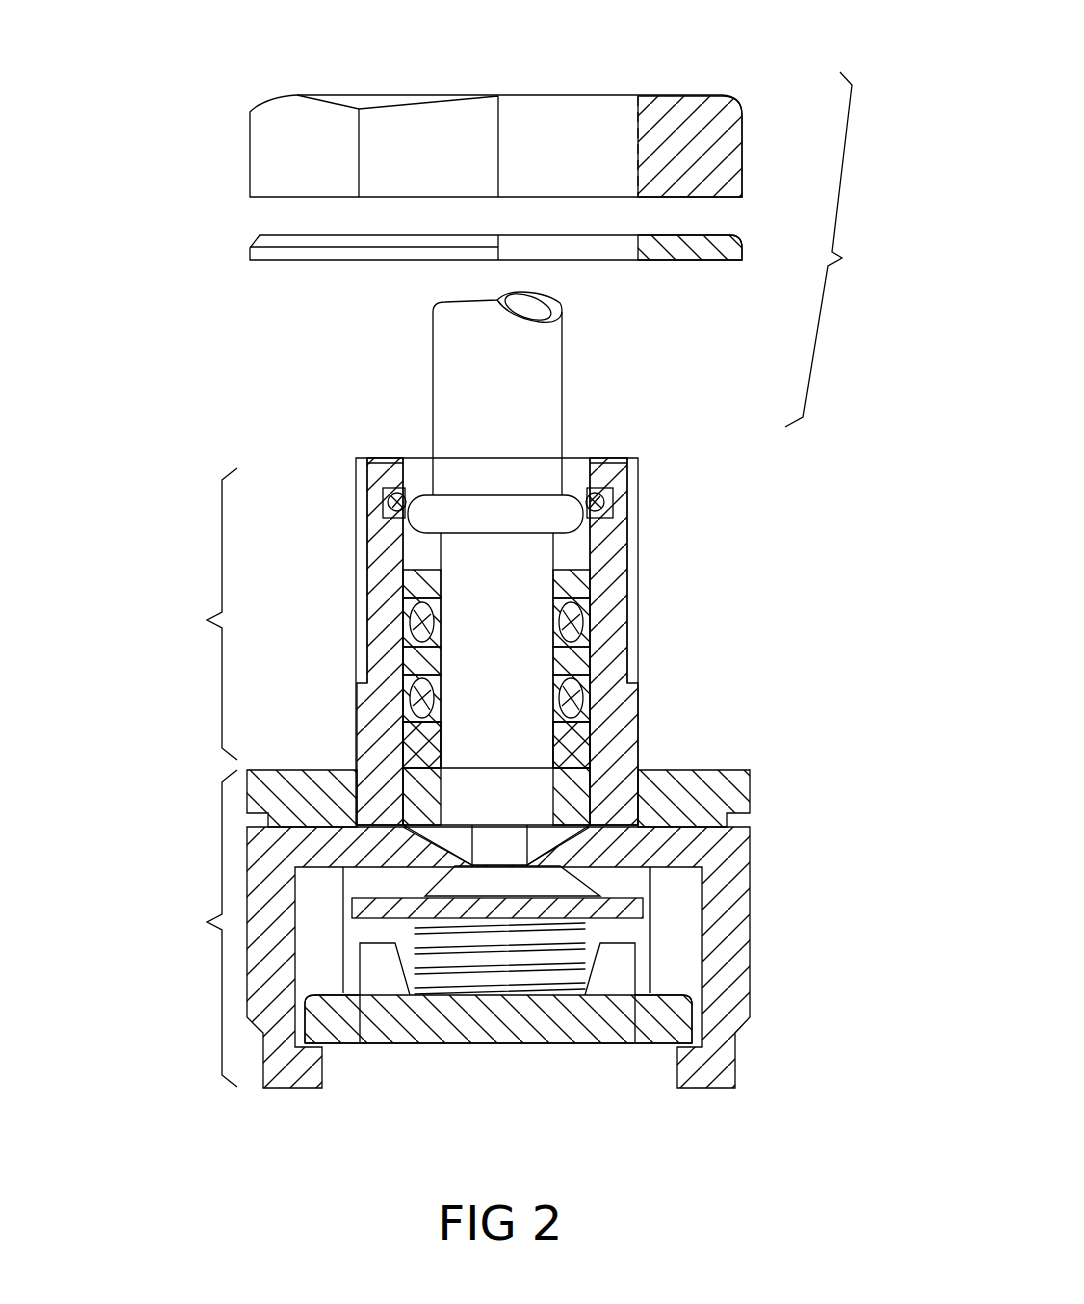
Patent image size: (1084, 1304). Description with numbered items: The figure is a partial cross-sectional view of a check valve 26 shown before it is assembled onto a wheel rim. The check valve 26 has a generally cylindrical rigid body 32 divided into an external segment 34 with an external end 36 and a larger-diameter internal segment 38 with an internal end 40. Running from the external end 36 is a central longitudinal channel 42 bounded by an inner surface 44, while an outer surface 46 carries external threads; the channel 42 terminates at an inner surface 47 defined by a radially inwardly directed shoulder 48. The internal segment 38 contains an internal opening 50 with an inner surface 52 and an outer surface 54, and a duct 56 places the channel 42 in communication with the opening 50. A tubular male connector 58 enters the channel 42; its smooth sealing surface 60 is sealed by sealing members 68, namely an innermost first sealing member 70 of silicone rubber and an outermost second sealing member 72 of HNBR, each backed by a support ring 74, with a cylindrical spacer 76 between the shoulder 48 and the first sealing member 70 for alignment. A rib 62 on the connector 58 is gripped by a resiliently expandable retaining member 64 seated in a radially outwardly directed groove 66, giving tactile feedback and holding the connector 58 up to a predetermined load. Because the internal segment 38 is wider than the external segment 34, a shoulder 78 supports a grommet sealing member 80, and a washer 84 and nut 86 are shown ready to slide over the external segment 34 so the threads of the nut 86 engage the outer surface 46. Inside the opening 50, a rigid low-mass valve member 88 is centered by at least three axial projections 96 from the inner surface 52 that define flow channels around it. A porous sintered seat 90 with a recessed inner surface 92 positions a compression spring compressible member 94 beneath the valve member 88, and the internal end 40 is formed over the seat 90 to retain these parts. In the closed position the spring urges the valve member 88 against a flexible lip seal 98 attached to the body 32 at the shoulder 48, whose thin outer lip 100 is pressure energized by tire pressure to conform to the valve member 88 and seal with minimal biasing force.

The check valve 26 is at (826, 492).
The body 32 is at (645, 687).
The external segment 34 is at (199, 614).
The external end 36 is at (378, 458).
The internal segment 38 is at (456, 929).
The internal end 40 is at (298, 1088).
The central longitudinal channel 42 is at (607, 553).
The inner surface 44 is at (405, 583).
The outer surface 46 is at (668, 740).
The inner surface 47 is at (460, 820).
The shoulder 48 is at (700, 845).
The internal opening 50 is at (700, 950).
The inner surface 52 is at (690, 970).
The outer surface 54 is at (750, 868).
The duct 56 is at (560, 872).
The male connector 58 is at (570, 393).
The sealing surface 60 is at (413, 705).
The rib 62 is at (576, 493).
The retaining member 64 is at (610, 500).
The groove 66 is at (385, 505).
The sealing member 68 is at (612, 680).
The first sealing member 70 is at (405, 695).
The second sealing member 72 is at (405, 628).
The support ring 74 is at (604, 588).
The cylindrical spacer 76 is at (630, 725).
The shoulder 78 is at (700, 810).
The sealing member 80 is at (746, 763).
The washer 84 is at (752, 232).
The nut 86 is at (750, 107).
The valve member 88 is at (685, 920).
The seat 90 is at (445, 1045).
The inner surface 92 is at (533, 995).
The compressible member 94 is at (545, 1000).
The projections 96 is at (720, 985).
The seal 98 is at (772, 982).
The outer lip 100 is at (450, 1035).